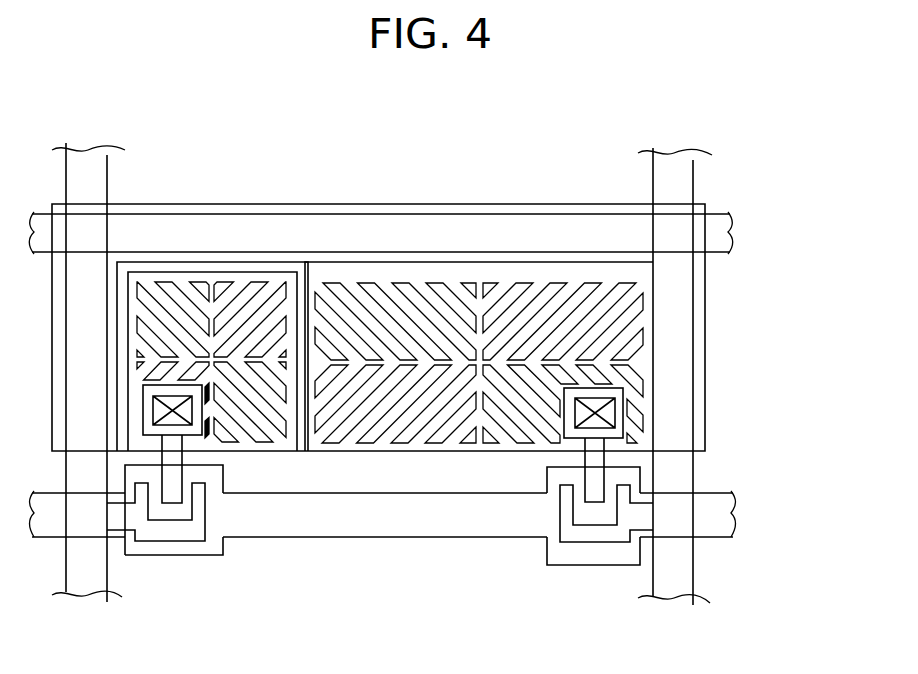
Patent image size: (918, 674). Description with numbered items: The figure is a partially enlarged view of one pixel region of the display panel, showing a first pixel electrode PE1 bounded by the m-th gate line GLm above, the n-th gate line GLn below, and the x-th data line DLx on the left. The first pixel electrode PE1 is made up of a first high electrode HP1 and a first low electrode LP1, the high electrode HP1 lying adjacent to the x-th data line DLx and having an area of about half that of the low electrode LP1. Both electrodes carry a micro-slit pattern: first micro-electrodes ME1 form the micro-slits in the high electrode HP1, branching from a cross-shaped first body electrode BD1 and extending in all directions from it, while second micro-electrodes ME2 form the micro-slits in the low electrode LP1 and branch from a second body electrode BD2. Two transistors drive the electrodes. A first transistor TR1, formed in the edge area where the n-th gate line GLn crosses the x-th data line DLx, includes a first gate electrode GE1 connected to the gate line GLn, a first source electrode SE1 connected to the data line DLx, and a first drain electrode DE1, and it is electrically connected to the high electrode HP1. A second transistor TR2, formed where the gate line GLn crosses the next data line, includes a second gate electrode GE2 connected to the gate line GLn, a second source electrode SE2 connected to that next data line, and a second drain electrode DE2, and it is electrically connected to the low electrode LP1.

The first pixel electrode PE1 is at (372, 127).
The first high electrode HP1 is at (277, 277).
The first low electrode LP1 is at (330, 268).
The first micro-electrodes ME1 is at (243, 315).
The second micro-electrodes ME2 is at (415, 322).
The first body electrode BD1 is at (172, 360).
The second body electrode BD2 is at (555, 362).
The m-th gate line GLm is at (716, 241).
The n-th gate line GLn is at (716, 521).
The x-th data line DLx is at (80, 578).
The first transistor TR1 is at (175, 547).
The second transistor TR2 is at (588, 549).
The first source electrode SE1 is at (143, 547).
The first drain electrode DE1 is at (173, 495).
The first gate electrode GE1 is at (188, 500).
The second source electrode SE2 is at (623, 550).
The second drain electrode DE2 is at (595, 500).
The second gate electrode GE2 is at (573, 505).